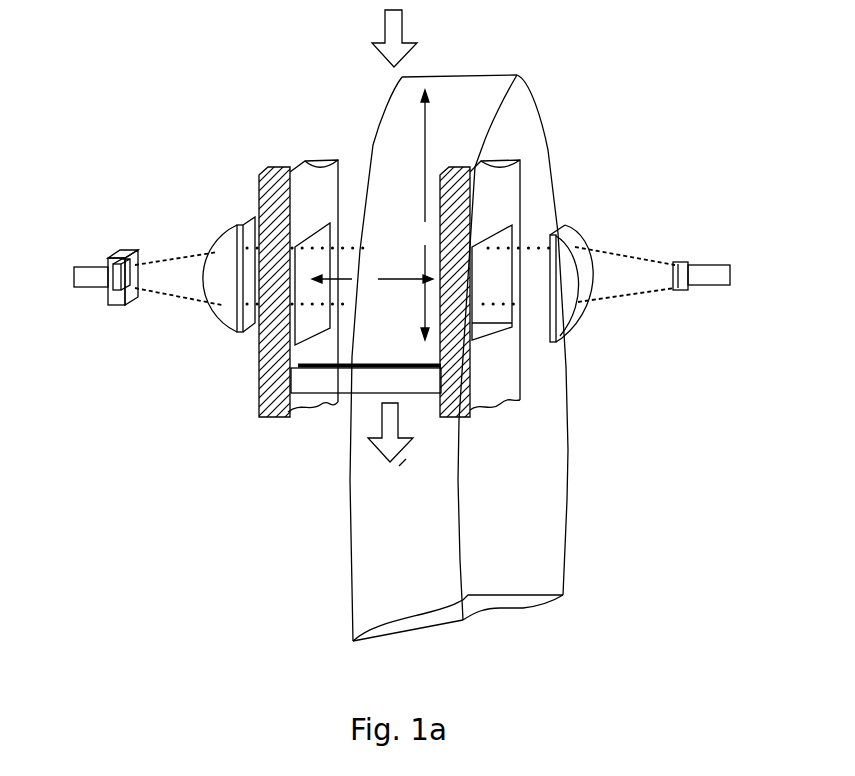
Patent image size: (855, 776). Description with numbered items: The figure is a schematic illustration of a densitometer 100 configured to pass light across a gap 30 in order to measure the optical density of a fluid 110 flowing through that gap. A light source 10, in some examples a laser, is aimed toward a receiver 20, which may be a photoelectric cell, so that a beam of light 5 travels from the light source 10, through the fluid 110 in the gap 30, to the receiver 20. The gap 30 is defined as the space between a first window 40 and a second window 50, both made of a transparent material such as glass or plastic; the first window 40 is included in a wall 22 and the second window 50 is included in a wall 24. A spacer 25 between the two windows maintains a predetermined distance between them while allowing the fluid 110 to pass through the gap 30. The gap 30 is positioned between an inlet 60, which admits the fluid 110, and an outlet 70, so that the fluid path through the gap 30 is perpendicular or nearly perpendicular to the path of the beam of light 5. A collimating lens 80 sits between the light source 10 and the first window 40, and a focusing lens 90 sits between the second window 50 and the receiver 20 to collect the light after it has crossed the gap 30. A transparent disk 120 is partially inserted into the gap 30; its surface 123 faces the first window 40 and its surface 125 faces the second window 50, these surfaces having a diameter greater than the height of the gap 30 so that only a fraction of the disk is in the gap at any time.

The beam of light 5 is at (628, 252).
The light source 10 is at (708, 291).
The receiver 20 is at (108, 288).
The wall 22 is at (490, 397).
The wall 24 is at (315, 385).
The spacer 25 is at (290, 411).
The gap 30 is at (378, 291).
The first window 40 is at (482, 333).
The second window 50 is at (266, 348).
The inlet 60 is at (343, 147).
The outlet 70 is at (419, 416).
The lens 80 is at (572, 238).
The lens 90 is at (220, 313).
The densitometer 100 is at (214, 412).
The fluid 110 is at (403, 17).
The transparent disk 120 is at (383, 87).
The surface 123 is at (433, 124).
The surface 125 is at (353, 117).